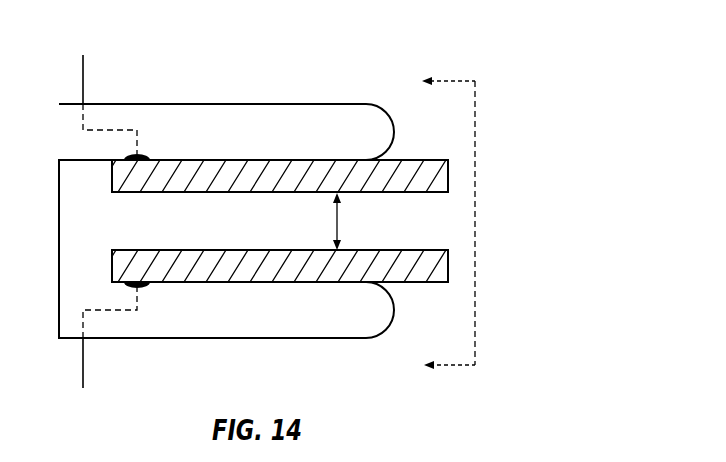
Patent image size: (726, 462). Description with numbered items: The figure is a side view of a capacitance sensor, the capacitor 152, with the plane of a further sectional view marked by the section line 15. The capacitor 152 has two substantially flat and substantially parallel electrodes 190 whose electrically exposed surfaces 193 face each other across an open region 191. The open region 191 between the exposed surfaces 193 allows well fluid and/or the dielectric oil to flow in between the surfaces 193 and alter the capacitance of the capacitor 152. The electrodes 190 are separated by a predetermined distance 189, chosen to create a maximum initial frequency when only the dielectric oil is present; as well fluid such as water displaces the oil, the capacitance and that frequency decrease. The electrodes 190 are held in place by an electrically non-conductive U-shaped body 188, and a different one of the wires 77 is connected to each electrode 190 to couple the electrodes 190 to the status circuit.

The capacitor 152 is at (329, 201).
The section line 15- 15 is at (431, 225).
The wires 77 is at (85, 73).
The U-shaped body 188 is at (395, 130).
The predetermined distance 189 is at (338, 222).
The electrodes 190 is at (450, 258).
The open region 191 is at (193, 233).
The electrically exposed surfaces 193 is at (297, 250).